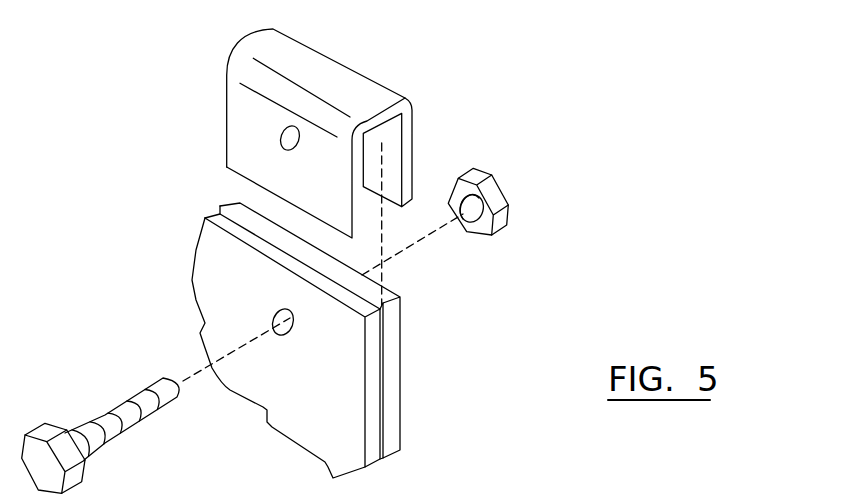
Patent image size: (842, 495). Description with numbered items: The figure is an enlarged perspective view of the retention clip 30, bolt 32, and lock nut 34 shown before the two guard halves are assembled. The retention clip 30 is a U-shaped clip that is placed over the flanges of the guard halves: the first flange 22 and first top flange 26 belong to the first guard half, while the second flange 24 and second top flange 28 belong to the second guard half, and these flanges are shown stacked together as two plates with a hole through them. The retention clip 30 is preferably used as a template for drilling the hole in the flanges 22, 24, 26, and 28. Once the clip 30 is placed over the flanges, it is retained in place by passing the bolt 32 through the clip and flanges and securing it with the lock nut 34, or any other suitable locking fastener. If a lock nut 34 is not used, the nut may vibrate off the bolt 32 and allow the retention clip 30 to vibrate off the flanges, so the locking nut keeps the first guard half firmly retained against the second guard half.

The retention clip 30 is at (265, 50).
The first flange 22 is at (375, 390).
The first top flange 26 is at (375, 390).
The second flange 24 is at (400, 350).
The second top flange 28 is at (470, 338).
The bolt 32 is at (122, 405).
The lock nut 34 is at (508, 220).